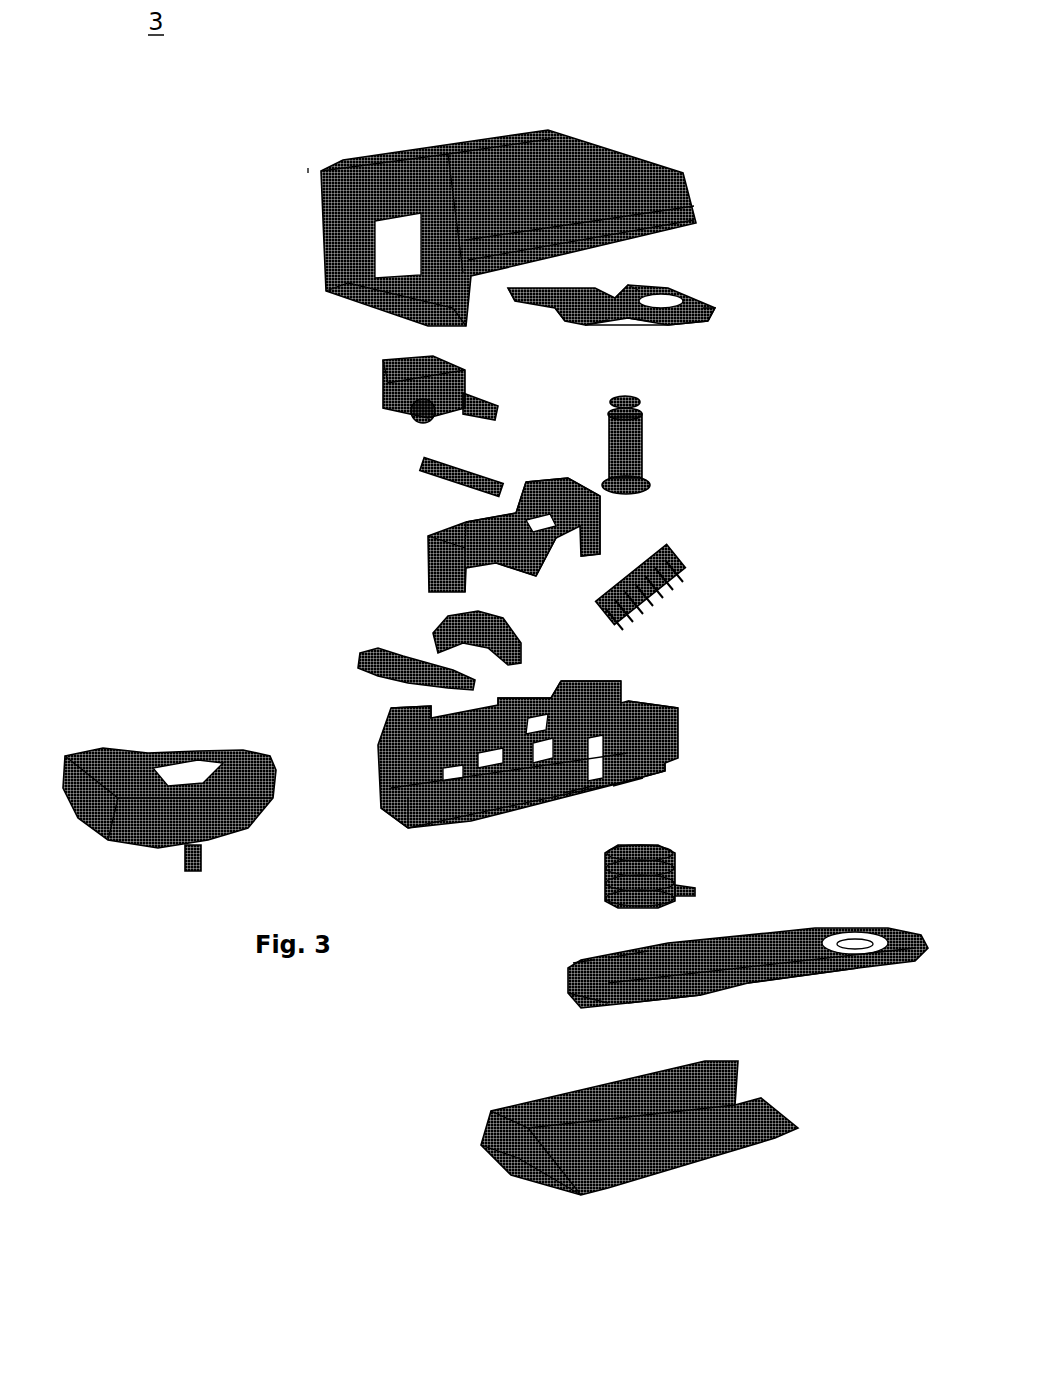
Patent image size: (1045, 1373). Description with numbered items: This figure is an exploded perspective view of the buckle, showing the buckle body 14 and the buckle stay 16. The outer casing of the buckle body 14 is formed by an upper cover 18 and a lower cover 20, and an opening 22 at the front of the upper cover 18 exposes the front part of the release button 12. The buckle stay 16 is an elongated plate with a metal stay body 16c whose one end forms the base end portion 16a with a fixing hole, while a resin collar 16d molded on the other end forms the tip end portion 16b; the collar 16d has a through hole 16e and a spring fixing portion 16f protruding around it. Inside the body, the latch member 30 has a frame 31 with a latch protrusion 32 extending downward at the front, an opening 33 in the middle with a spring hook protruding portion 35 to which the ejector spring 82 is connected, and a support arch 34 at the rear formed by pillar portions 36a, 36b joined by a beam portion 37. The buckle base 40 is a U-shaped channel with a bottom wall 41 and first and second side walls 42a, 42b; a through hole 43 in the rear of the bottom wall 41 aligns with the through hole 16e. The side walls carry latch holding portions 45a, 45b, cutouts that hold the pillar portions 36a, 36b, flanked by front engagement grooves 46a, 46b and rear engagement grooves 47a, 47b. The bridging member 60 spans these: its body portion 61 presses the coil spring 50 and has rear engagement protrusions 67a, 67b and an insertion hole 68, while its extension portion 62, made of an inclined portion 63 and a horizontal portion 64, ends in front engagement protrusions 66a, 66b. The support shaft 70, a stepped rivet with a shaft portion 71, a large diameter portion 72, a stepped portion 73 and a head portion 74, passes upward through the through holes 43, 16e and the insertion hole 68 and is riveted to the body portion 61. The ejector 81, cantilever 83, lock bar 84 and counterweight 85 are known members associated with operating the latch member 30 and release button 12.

The release button 12 is at (100, 756).
The buckle body 14 is at (243, 148).
The buckle stay 16 is at (772, 922).
The base end portion 16a is at (880, 924).
The tip end portion 16b is at (565, 986).
The stay body 16c is at (792, 975).
The collar 16d is at (647, 1000).
The through hole 16e is at (613, 952).
The spring fixing portion 16f is at (575, 966).
The upper cover 18 is at (415, 143).
The lower cover 20 is at (500, 1162).
The opening 22 is at (310, 264).
The latch member 30 is at (428, 522).
The frame 31 is at (492, 558).
The latch protrusion 32 is at (420, 568).
The opening 33 is at (535, 557).
The support arch 34 is at (569, 484).
The spring hook protruding portion 35 is at (508, 511).
The pillar portion 36a is at (594, 527).
The pillar portion 36b is at (518, 492).
The beam portion 37 is at (534, 475).
The buckle base 40 is at (680, 720).
The bottom wall 41 is at (487, 805).
The first side wall 42a is at (377, 804).
The second side wall 42b is at (380, 714).
The through hole 43 is at (652, 769).
The latch holding portion 45a is at (619, 787).
The latch holding portion 45b is at (537, 712).
The front engagement groove 46a is at (569, 791).
The front engagement groove 46b is at (505, 696).
The rear engagement groove 47a is at (636, 701).
The rear engagement groove 47b is at (587, 684).
The coil spring 50 is at (675, 838).
The bridging member 60 is at (692, 283).
The body portion 61 is at (652, 280).
The extension portion 62 is at (666, 352).
The inclined portion 63 is at (628, 312).
The horizontal portion 64 is at (592, 318).
The front engagement protrusion 66a is at (556, 319).
The front engagement protrusion 66b is at (503, 296).
The rear engagement protrusion 67a is at (688, 320).
The rear engagement protrusion 67b is at (616, 285).
The insertion hole 68 is at (702, 311).
The support shaft 70 is at (648, 432).
The shaft portion 71 is at (598, 447).
The large diameter portion 72 is at (640, 483).
The stepped portion 73 is at (637, 407).
The head portion 74 is at (630, 393).
The ejector 81 is at (372, 661).
The ejector spring 82 is at (642, 586).
The cantilever 83 is at (425, 628).
The lock bar 84 is at (410, 457).
The counterweight 85 is at (372, 393).